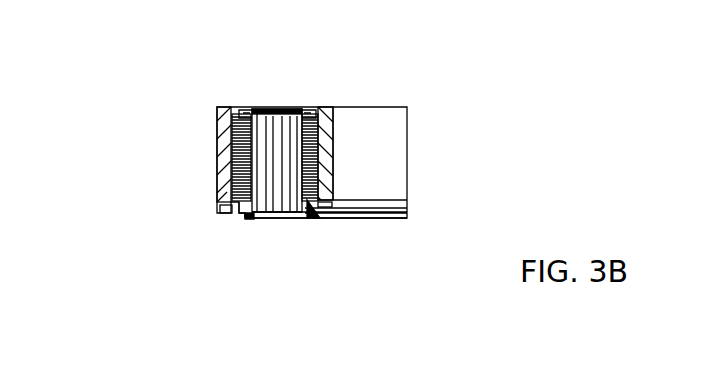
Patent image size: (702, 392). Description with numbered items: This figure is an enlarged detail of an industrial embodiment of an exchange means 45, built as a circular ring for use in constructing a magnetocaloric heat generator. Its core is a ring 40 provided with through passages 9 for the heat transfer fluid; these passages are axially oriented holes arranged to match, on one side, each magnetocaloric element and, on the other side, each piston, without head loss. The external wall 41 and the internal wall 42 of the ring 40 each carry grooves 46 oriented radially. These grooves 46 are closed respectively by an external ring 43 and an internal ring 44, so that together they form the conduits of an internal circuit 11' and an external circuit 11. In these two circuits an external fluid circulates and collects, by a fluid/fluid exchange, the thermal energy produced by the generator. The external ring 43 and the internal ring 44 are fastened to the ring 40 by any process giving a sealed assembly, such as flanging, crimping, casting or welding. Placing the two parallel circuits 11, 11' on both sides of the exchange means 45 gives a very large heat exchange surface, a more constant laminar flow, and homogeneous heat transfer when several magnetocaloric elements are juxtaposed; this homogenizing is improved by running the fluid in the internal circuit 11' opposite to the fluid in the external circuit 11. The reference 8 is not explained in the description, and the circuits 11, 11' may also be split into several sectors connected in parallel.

The core 8 is at (279, 104).
The through passages 9 is at (277, 212).
The external circuit 11 is at (223, 263).
The internal circuit 11' is at (343, 60).
The ring 40 is at (302, 213).
The external wall 41 is at (255, 108).
The internal wall 42 is at (313, 212).
The external ring 43 is at (217, 123).
The internal ring 44 is at (330, 130).
The exchange means 45 is at (180, 168).
The grooves 46 is at (224, 177).